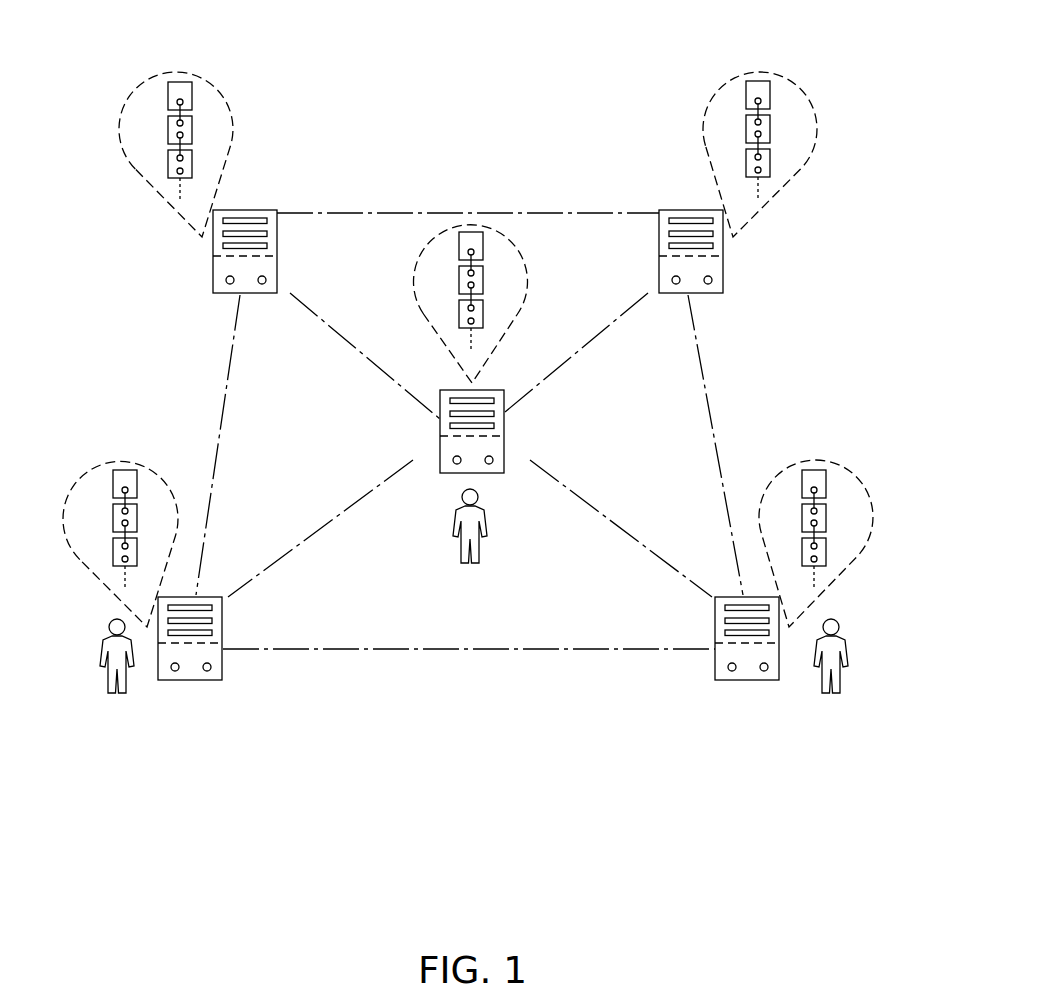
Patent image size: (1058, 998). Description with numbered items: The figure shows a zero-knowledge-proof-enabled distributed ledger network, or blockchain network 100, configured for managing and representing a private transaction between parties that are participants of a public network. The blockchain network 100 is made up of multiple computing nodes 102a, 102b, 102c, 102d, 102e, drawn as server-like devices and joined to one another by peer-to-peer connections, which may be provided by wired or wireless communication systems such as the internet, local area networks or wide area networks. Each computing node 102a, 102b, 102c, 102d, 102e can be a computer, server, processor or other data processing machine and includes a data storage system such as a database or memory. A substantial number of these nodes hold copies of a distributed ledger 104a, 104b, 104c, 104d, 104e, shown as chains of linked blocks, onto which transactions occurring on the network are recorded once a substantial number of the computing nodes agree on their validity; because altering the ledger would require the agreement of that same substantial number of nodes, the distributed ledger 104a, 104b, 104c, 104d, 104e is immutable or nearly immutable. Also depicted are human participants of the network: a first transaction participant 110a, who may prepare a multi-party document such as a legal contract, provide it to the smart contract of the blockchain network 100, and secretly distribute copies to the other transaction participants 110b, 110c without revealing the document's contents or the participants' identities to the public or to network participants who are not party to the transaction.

The ZKP-enabled distributed ledger network 100 is at (90, 300).
The computing node 102a is at (223, 622).
The computing node 102b is at (715, 630).
The computing node 102c is at (505, 427).
The computing node 102d is at (245, 210).
The computing node 102e is at (680, 210).
The distributed ledger copy 104a is at (100, 465).
The distributed ledger copy 104b is at (873, 515).
The distributed ledger copy 104c is at (523, 312).
The distributed ledger copy 104d is at (233, 115).
The distributed ledger copy 104e is at (807, 95).
The first transaction participant 110a is at (102, 658).
The transaction participant 110b is at (848, 657).
The transaction participant 110c is at (483, 543).